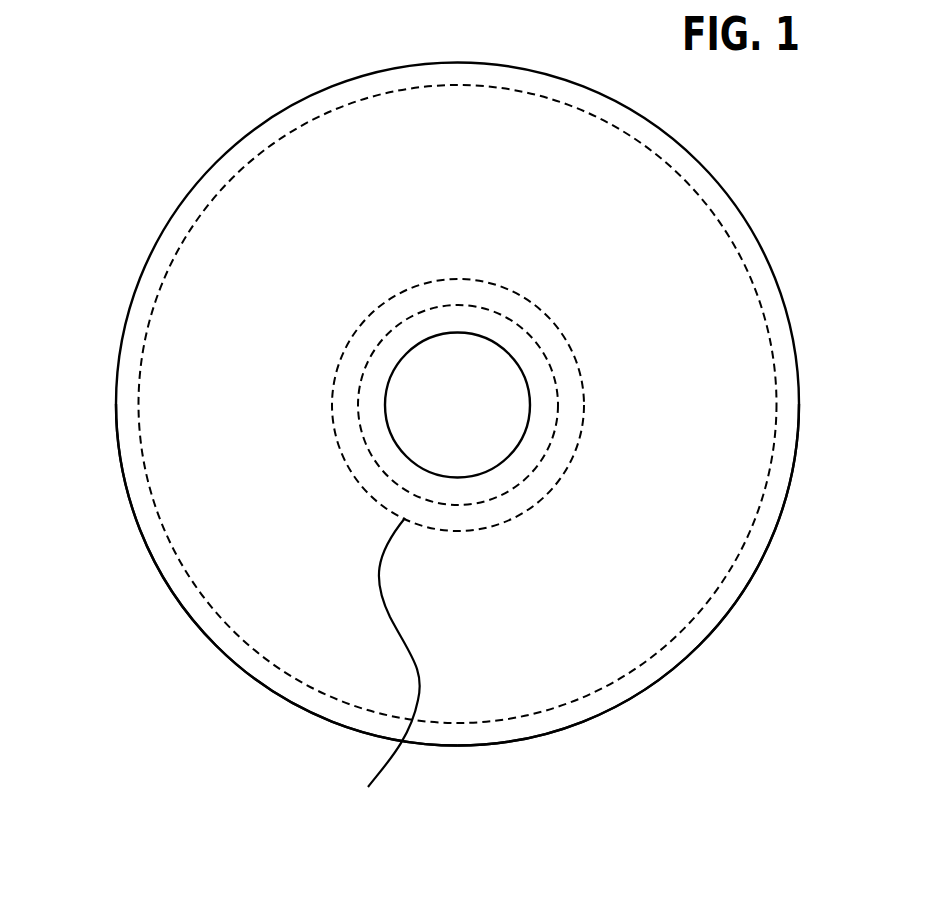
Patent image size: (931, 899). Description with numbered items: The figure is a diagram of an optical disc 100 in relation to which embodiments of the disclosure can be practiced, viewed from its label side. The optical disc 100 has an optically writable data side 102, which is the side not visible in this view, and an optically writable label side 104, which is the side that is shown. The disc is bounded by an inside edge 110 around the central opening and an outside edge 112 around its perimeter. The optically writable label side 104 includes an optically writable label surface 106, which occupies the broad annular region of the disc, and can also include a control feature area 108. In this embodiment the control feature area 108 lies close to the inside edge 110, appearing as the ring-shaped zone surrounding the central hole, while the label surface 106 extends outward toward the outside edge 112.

The optical disc 100 is at (101, 477).
The optically writable data side 102 is at (771, 572).
The optically writable label side 104 is at (670, 153).
The optically writable label surface 106 is at (593, 210).
The control feature area 108 is at (395, 753).
The inside edge 110 is at (388, 430).
The outside edge 112 is at (245, 681).